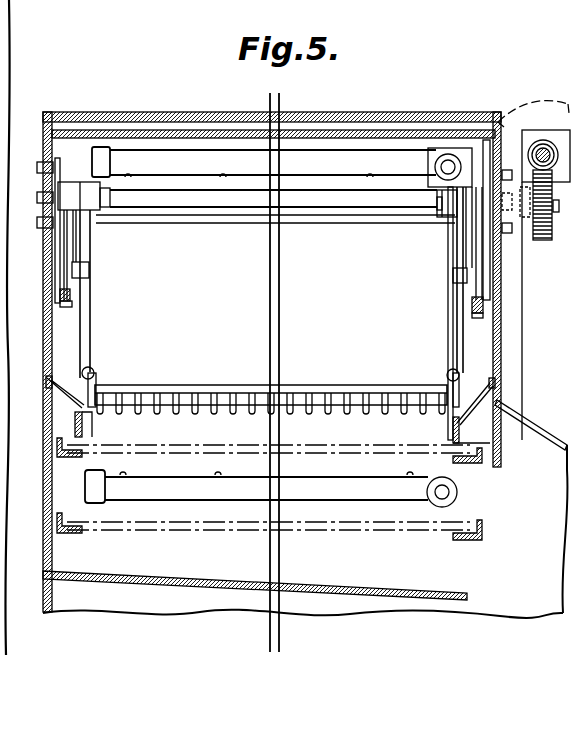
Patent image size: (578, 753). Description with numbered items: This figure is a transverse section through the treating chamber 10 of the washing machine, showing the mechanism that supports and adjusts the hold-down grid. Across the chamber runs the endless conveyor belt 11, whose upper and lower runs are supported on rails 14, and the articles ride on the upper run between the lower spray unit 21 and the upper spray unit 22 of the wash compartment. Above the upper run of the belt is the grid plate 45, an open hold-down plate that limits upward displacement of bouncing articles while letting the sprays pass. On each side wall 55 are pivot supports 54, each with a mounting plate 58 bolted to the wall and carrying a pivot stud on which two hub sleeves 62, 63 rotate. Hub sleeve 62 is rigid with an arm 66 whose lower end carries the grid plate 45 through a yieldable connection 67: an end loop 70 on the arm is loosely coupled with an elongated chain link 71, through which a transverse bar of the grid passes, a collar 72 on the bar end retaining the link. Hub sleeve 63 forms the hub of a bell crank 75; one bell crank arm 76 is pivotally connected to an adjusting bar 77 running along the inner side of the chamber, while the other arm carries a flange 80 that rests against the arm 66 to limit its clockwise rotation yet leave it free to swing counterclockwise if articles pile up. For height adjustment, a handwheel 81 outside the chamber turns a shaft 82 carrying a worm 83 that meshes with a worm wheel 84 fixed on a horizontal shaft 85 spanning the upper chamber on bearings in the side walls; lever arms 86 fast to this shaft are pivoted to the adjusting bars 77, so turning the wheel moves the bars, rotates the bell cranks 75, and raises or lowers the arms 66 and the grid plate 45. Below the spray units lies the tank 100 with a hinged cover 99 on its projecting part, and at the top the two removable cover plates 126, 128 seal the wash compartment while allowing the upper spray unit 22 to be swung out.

The treating chamber 10 is at (17, 52).
The endless conveyor belt 11 is at (240, 448).
The rails 14 is at (68, 462).
The lower spray unit 21 is at (200, 507).
The upper spray unit 22 is at (333, 181).
The grid plate 45 is at (336, 382).
The pivot supports 54 is at (117, 197).
The side wall 55 is at (44, 338).
The mounting plate 58 is at (56, 171).
The hub sleeve 62 is at (440, 205).
The hub sleeve 63 is at (473, 190).
The arm 66 is at (85, 338).
The yieldable connection 67 is at (72, 390).
The end loop 70 is at (95, 372).
The chain link 71 is at (92, 410).
The collar 72 is at (477, 431).
The bell crank 75 is at (82, 240).
The bell crank arm 76 is at (70, 299).
The adjusting bar 77 is at (72, 293).
The flange 80 is at (89, 272).
The handwheel 81 is at (535, 103).
The shaft 82 is at (532, 154).
The worm 83 is at (545, 150).
The worm wheel 84 is at (549, 242).
The shaft 85 is at (212, 200).
The lever arms 86 is at (56, 249).
The hinged cover 99 is at (546, 436).
The tank 100 is at (533, 603).
The cover plate 126 is at (165, 130).
The cover plate 128 is at (137, 119).